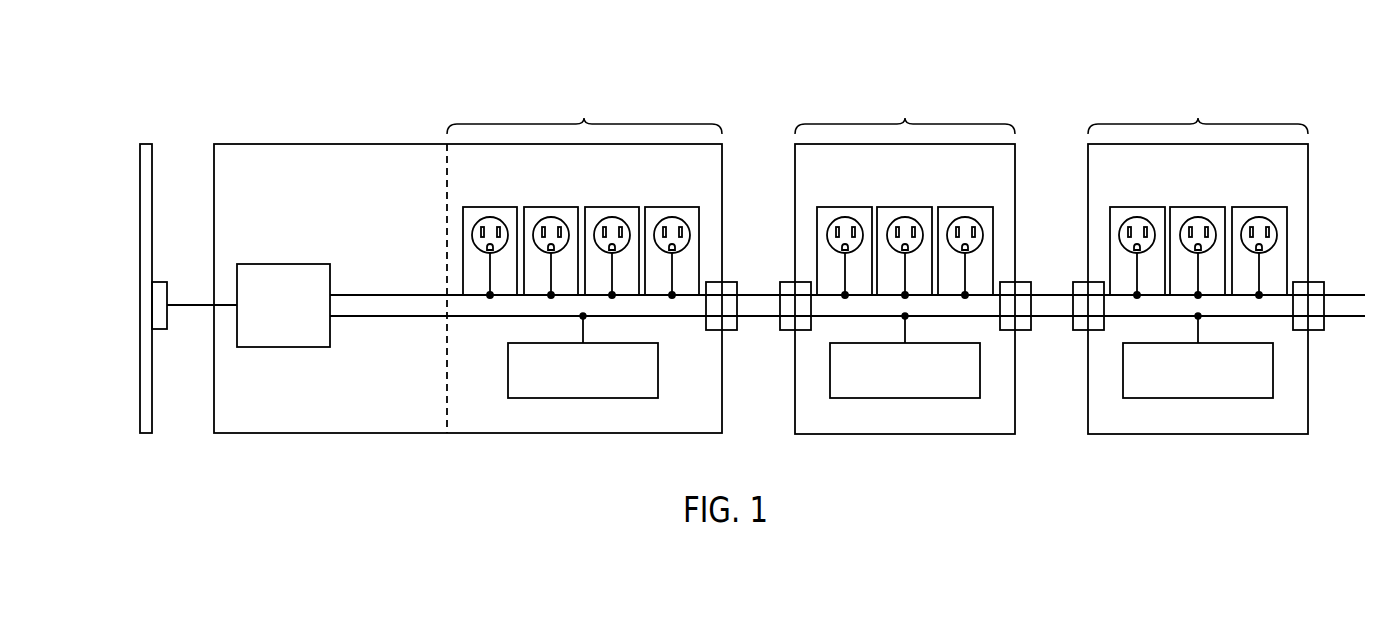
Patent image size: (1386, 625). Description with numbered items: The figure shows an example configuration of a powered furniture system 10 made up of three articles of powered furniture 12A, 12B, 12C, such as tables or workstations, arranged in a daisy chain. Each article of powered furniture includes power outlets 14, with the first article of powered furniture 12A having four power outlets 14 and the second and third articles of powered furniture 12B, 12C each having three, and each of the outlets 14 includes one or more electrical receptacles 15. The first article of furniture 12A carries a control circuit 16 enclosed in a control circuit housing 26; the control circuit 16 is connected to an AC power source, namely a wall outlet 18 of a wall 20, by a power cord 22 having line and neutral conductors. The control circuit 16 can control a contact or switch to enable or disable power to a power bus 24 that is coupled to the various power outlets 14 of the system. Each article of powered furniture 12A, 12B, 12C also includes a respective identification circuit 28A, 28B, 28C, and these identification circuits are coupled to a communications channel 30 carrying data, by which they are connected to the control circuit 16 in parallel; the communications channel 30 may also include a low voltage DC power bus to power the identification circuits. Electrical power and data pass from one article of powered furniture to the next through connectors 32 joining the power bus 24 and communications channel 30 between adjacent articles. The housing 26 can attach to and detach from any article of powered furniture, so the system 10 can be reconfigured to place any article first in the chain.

The powered furniture system 10 is at (222, 80).
The first article of powered furniture 12A is at (584, 111).
The second article of powered furniture 12B is at (905, 261).
The third article of powered furniture 12C is at (1198, 261).
The power outlet 14 is at (611, 207).
The electrical receptacle 15 is at (606, 217).
The control circuit 16 is at (283, 264).
The wall outlet 18 is at (153, 329).
The wall 20 is at (140, 287).
The power cord 22 is at (190, 302).
The power bus 24 is at (423, 294).
The control circuit housing 26 is at (330, 144).
The identification circuit 28A is at (583, 398).
The identification circuit 28B is at (905, 398).
The identification circuit 28C is at (1198, 398).
The communications channel 30 is at (422, 318).
The connector 32 is at (728, 330).